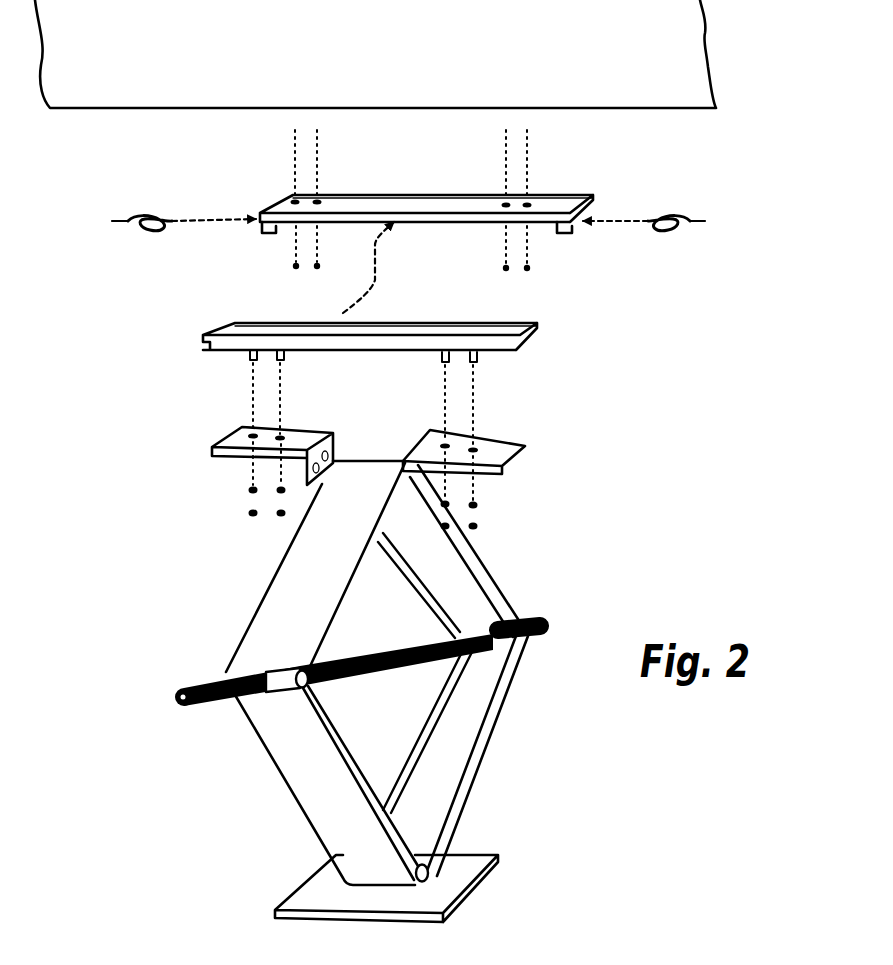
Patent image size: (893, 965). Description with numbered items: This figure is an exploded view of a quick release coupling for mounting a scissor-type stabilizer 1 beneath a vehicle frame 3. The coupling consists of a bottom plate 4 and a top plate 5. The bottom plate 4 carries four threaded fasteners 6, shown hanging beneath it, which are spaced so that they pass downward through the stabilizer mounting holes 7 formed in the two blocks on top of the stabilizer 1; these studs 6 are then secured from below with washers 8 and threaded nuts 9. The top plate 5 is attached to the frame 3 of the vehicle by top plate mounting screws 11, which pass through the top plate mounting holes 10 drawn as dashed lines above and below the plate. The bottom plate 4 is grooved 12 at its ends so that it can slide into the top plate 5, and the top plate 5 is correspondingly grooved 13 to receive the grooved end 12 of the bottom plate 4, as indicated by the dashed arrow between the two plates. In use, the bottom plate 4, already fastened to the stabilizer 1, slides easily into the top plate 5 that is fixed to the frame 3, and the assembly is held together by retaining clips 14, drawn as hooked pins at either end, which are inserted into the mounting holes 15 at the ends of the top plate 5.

The stabilizer 1 is at (298, 770).
The frame 3 is at (690, 31).
The bottom plate 4 is at (425, 322).
The top plate 5 is at (455, 195).
The threaded fasteners 6 is at (280, 363).
The stabilizer mounting holes 7 is at (255, 432).
The washers 8 is at (281, 489).
The threaded nuts 9 is at (280, 516).
The top plate mounting holes 10 is at (316, 199).
The top plate mounting screws 11 is at (317, 271).
The grooved end 12 is at (200, 350).
The groove 13 is at (254, 208).
The retaining clips 14 is at (146, 212).
The mounting holes 15 is at (262, 237).